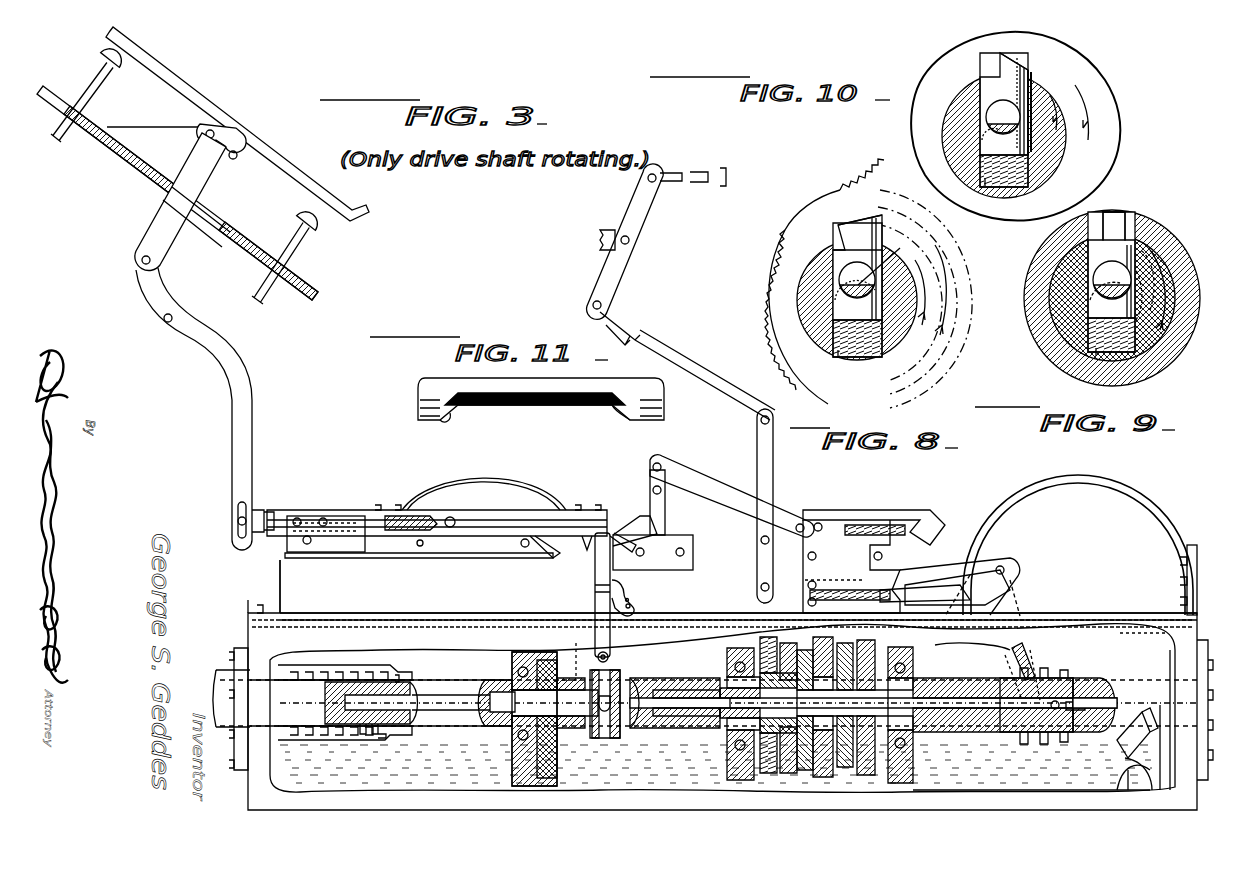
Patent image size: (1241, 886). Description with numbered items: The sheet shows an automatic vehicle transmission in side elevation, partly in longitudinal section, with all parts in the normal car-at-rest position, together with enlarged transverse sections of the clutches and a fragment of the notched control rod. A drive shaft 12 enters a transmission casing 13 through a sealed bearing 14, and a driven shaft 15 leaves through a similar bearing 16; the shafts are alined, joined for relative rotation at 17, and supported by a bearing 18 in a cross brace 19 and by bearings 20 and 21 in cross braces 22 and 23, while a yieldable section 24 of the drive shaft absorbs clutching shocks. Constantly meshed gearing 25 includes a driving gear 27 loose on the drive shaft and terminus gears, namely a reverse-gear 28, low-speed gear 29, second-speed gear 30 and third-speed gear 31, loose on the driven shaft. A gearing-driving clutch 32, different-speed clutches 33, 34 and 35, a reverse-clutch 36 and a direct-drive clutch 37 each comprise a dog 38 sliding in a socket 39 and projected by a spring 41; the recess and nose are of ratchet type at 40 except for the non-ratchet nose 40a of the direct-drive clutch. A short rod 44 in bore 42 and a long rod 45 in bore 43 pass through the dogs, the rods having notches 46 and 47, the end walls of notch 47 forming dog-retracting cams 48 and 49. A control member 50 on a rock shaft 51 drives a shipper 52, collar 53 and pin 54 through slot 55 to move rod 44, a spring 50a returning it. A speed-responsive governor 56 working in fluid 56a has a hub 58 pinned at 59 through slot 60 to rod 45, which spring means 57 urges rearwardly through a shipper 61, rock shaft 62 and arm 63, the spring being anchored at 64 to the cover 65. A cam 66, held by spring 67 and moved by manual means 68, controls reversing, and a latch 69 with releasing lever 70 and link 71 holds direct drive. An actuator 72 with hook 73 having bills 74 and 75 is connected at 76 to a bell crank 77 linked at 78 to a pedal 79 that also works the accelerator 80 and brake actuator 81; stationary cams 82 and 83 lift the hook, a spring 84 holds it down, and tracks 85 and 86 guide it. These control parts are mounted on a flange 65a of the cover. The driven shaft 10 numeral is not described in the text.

In FIG. 3, the driven shaft 10 is at (821, 801).
In FIG. 3, the drive shaft 12 is at (221, 674).
In FIG. 8, the drive shaft 12 is at (810, 318).
In FIG. 9, the drive shaft 12 is at (1175, 265).
In FIG. 3, the transmission casing 13 is at (258, 628).
In FIG. 3, the bearing 14 is at (238, 660).
In FIG. 3, the driven shaft 15 is at (1175, 770).
In FIG. 10, the driven shaft 15 is at (945, 118).
In FIG. 9, the driven shaft 15 is at (1160, 350).
In FIG. 3, the bearing 16 is at (1195, 662).
In FIG. 3, the connection for relative rotation 17 is at (722, 690).
In FIG. 3, the bearing 18 is at (726, 660).
In FIG. 3, the cross brace 19 is at (765, 770).
In FIG. 3, the bearing 20 is at (507, 659).
In FIG. 3, the bearing 21 is at (916, 680).
In FIG. 3, the cross brace 22 is at (515, 770).
In FIG. 3, the cross brace 23 is at (915, 770).
In FIG. 3, the yieldable section 24 is at (330, 665).
In FIG. 3, the constantly meshed gearing 25 is at (550, 735).
In FIG. 3, the driving gear 27 is at (522, 775).
In FIG. 8, the driving gear 27 is at (775, 235).
In FIG. 3, the reverse-gear 28 is at (912, 775).
In FIG. 3, the low-speed gear 29 is at (866, 776).
In FIG. 10, the low-speed gear 29 is at (1118, 118).
In FIG. 3, the second-speed gear 30 is at (800, 650).
In FIG. 3, the third-speed gear 31 is at (770, 740).
In FIG. 3, the gearing-driving clutch 32 is at (580, 760).
In FIG. 8, the gearing-driving clutch 32 is at (825, 264).
In FIG. 3, the different-speed clutch 33 is at (847, 770).
In FIG. 10, the different-speed clutch 33 is at (1034, 84).
In FIG. 3, the different-speed clutch 34 is at (802, 735).
In FIG. 3, the different-speed clutch 35 is at (785, 740).
In FIG. 3, the reverse-clutch 36 is at (905, 784).
In FIG. 9, the direct-drive clutch 37 is at (1085, 277).
In FIG. 10, the dog 38 is at (988, 78).
In FIG. 8, the dog 38 is at (868, 250).
In FIG. 9, the dog 38 is at (1122, 245).
In FIG. 10, the socket 39 is at (982, 172).
In FIG. 8, the socket 39 is at (826, 339).
In FIG. 9, the socket 39 is at (1088, 335).
In FIG. 10, the ratchet-type recess and dog nose 40 is at (1021, 58).
In FIG. 8, the ratchet-type recess and dog nose 40 is at (845, 218).
In FIG. 9, the non-ratchet dog nose 40a is at (1096, 214).
In FIG. 10, the spring 41 is at (1000, 186).
In FIG. 8, the spring 41 is at (865, 357).
In FIG. 9, the spring 41 is at (1122, 350).
In FIG. 3, the axial bore 42 is at (672, 692).
In FIG. 10, the axial bore 42 is at (993, 108).
In FIG. 8, the axial bore 42 is at (843, 276).
In FIG. 9, the axial bore 42 is at (1100, 268).
In FIG. 3, the axial bore 43 is at (1118, 700).
In FIG. 3, the short rod 44 is at (486, 714).
In FIG. 8, the short rod 44 is at (842, 290).
In FIG. 3, the long rod 45 is at (1003, 700).
In FIG. 11, the long rod 45 is at (418, 398).
In FIG. 10, the long rod 45 is at (990, 128).
In FIG. 9, the long rod 45 is at (1095, 290).
In FIG. 3, the clutch-controlling notch 46 is at (480, 687).
In FIG. 8, the clutch-controlling notch 46 is at (870, 280).
In FIG. 3, the notch 47 is at (952, 648).
In FIG. 11, the notch 47 is at (550, 413).
In FIG. 10, the notch 47 is at (995, 133).
In FIG. 9, the notch 47 is at (1100, 305).
In FIG. 11, the dog-retracting cam 48 is at (448, 420).
In FIG. 11, the cam 49 is at (614, 418).
In FIG. 3, the control member 50 is at (594, 577).
In FIG. 3, the spring 50a is at (612, 592).
In FIG. 3, the rock shaft 51 is at (610, 658).
In FIG. 3, the shipper 52 is at (616, 672).
In FIG. 3, the collar 53 is at (602, 680).
In FIG. 3, the pin 54 is at (655, 690).
In FIG. 3, the slot 55 is at (580, 650).
In FIG. 3, the speed-responsive governor 56 is at (1135, 775).
In FIG. 3, the oil or fluid 56a is at (1052, 780).
In FIG. 3, the spring means 57 is at (1110, 485).
In FIG. 3, the hub 58 is at (1070, 675).
In FIG. 3, the pin 59 is at (1055, 700).
In FIG. 3, the slot 60 is at (1082, 700).
In FIG. 3, the shipper 61 is at (1010, 652).
In FIG. 3, the rock shaft 62 is at (1010, 568).
In FIG. 3, the arm 63 is at (936, 575).
In FIG. 3, the anchor 64 is at (1182, 556).
In FIG. 3, the transmission cover 65 is at (1090, 614).
In FIG. 3, the flange 65a is at (282, 572).
In FIG. 3, the cam 66 is at (960, 592).
In FIG. 3, the spring 67 is at (900, 590).
In FIG. 3, the manually operable means 68 is at (623, 298).
In FIG. 3, the latch 69 is at (905, 522).
In FIG. 3, the releasing lever 70 is at (668, 522).
In FIG. 3, the link 71 is at (726, 490).
In FIG. 3, the actuator 72 is at (405, 535).
In FIG. 3, the hook 73 is at (495, 500).
In FIG. 3, the bill 74 is at (587, 535).
In FIG. 3, the bill 75 is at (616, 533).
In FIG. 3, the connection 76 is at (236, 519).
In FIG. 3, the bell crank 77 is at (232, 398).
In FIG. 3, the link 78 is at (158, 235).
In FIG. 3, the pedal 79 is at (215, 122).
In FIG. 3, the motor accelerator 80 is at (100, 60).
In FIG. 3, the brake actuator 81 is at (306, 258).
In FIG. 3, the stationary cam 82 is at (542, 548).
In FIG. 3, the stationary cam 83 is at (625, 548).
In FIG. 3, the spring 84 is at (440, 486).
In FIG. 3, the track 85 is at (486, 537).
In FIG. 3, the track 86 is at (680, 540).